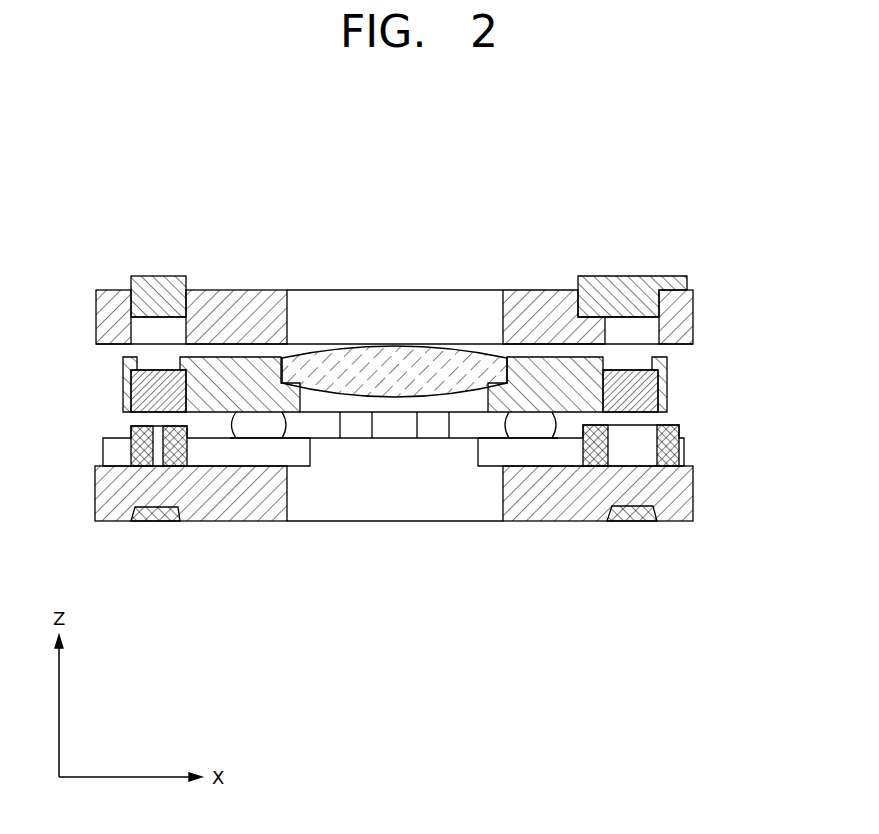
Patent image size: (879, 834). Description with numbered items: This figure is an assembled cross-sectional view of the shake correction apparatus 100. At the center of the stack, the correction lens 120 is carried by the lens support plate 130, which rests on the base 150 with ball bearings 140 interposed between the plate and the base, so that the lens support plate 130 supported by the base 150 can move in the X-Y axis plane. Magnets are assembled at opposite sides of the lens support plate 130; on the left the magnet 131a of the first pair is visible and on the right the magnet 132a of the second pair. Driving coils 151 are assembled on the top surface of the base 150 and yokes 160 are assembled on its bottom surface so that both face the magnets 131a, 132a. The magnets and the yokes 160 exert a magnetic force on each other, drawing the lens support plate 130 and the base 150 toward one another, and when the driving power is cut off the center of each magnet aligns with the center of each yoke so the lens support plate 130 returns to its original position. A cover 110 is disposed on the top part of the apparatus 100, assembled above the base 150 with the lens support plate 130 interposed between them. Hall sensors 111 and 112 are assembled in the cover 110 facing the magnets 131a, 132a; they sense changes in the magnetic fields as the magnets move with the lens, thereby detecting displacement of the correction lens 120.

The shake correction apparatus 100 is at (633, 257).
The cover 110 is at (688, 317).
The hall sensor 111 is at (163, 277).
The hall sensor 112 is at (652, 287).
The correction lens 120 is at (393, 356).
The lens support plate 130 is at (665, 363).
The magnet 131a is at (130, 382).
The magnet 132a is at (656, 398).
The ball bearings 140 is at (512, 430).
The base 150 is at (685, 496).
The driving coils 151 is at (668, 452).
The yokes 160 is at (633, 522).